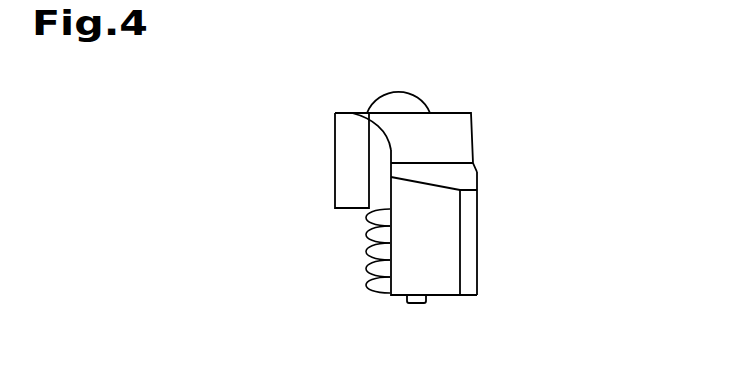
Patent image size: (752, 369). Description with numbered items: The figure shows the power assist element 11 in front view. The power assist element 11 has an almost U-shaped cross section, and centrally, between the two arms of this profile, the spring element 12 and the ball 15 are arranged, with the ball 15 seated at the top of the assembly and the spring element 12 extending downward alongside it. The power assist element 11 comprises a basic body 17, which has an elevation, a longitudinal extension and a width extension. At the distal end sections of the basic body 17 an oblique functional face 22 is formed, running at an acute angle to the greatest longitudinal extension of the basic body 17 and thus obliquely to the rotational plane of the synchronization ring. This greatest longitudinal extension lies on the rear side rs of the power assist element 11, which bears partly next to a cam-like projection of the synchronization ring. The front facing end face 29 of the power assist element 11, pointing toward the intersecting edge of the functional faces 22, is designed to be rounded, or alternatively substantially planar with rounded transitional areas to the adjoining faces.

The power assist element 11 is at (492, 117).
The ball 15 is at (368, 95).
The front facing end face 29 is at (318, 156).
The basic body 17 is at (443, 143).
The rear side rs is at (498, 213).
The oblique functional face 22 is at (412, 262).
The spring element 12 is at (363, 250).